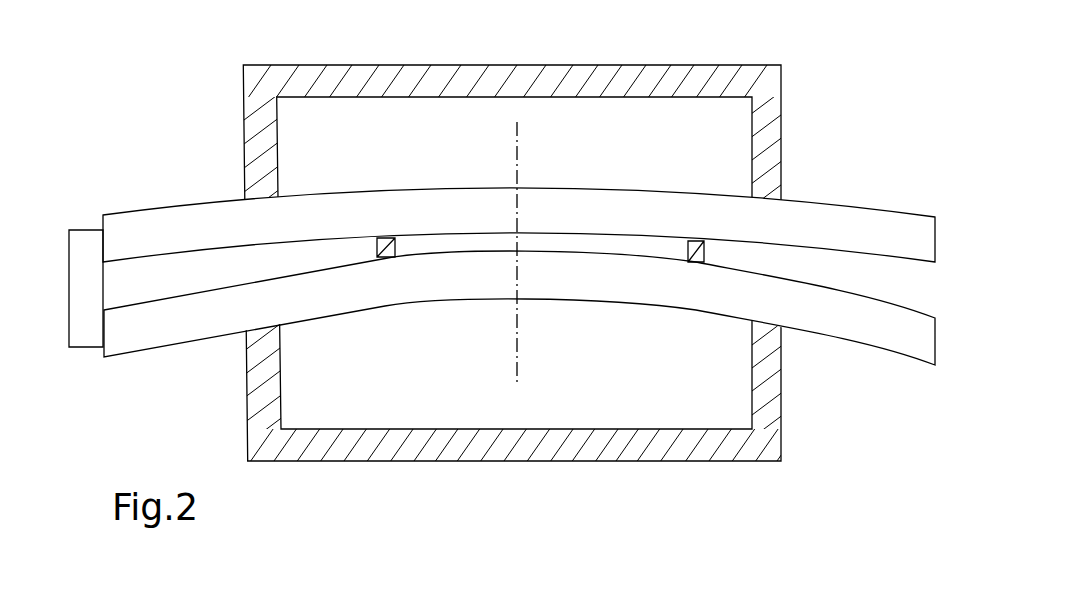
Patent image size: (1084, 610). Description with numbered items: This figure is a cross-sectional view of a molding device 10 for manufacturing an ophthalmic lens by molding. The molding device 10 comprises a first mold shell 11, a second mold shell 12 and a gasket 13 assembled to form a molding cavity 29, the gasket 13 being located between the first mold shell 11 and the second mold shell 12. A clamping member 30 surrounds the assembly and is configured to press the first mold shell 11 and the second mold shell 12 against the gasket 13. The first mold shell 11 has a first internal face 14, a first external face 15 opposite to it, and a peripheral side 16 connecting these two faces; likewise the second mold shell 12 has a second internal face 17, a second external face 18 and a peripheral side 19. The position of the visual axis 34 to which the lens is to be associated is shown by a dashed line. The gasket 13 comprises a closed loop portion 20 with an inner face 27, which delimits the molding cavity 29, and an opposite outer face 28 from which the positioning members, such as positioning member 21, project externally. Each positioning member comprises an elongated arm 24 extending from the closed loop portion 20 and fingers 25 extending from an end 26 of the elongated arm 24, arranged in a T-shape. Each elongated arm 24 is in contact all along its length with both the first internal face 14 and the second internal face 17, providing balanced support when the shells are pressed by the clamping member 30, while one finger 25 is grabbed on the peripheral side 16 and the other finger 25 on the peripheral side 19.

The molding device 10 is at (194, 80).
The first mold shell 11 is at (832, 200).
The second mold shell 12 is at (883, 352).
The gasket 13 is at (70, 245).
The first internal face 14 is at (890, 272).
The first external face 15 is at (860, 196).
The peripheral side 16 is at (95, 207).
The second internal face 17 is at (797, 259).
The second external face 18 is at (722, 340).
The peripheral side 19 is at (943, 360).
The closed loop portion 20 is at (700, 240).
The positioning member 21 is at (173, 273).
The elongated arm 24 is at (213, 277).
The finger 25 is at (90, 245).
The end 26 is at (118, 250).
The inner face 27 is at (406, 233).
The outer face 28 is at (716, 248).
The molding cavity 29 is at (612, 247).
The clamping member 30 is at (698, 65).
The visual axis 34 is at (515, 143).